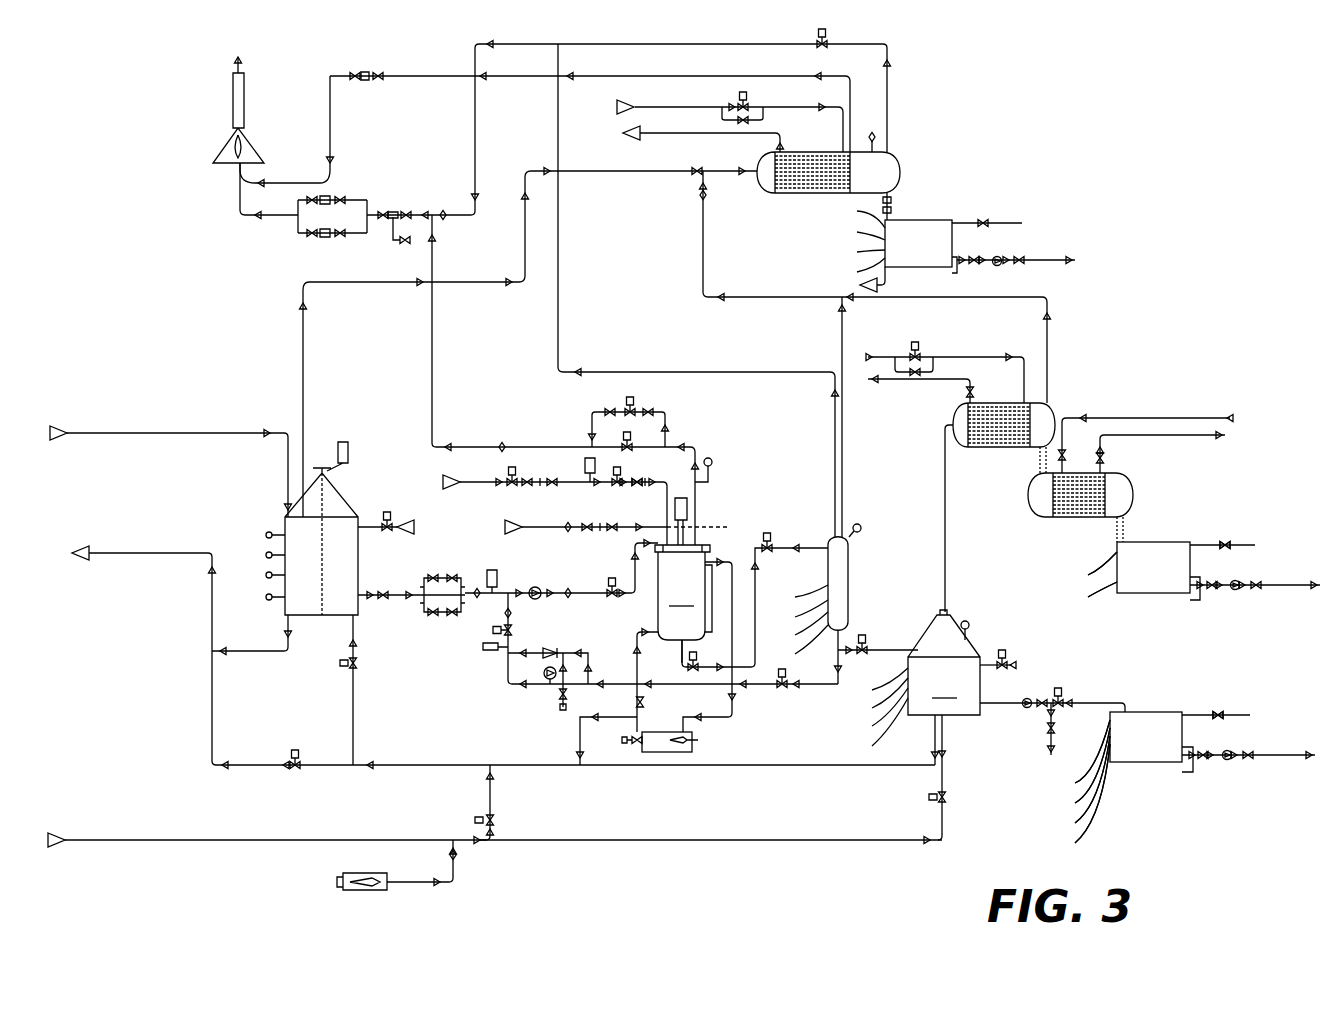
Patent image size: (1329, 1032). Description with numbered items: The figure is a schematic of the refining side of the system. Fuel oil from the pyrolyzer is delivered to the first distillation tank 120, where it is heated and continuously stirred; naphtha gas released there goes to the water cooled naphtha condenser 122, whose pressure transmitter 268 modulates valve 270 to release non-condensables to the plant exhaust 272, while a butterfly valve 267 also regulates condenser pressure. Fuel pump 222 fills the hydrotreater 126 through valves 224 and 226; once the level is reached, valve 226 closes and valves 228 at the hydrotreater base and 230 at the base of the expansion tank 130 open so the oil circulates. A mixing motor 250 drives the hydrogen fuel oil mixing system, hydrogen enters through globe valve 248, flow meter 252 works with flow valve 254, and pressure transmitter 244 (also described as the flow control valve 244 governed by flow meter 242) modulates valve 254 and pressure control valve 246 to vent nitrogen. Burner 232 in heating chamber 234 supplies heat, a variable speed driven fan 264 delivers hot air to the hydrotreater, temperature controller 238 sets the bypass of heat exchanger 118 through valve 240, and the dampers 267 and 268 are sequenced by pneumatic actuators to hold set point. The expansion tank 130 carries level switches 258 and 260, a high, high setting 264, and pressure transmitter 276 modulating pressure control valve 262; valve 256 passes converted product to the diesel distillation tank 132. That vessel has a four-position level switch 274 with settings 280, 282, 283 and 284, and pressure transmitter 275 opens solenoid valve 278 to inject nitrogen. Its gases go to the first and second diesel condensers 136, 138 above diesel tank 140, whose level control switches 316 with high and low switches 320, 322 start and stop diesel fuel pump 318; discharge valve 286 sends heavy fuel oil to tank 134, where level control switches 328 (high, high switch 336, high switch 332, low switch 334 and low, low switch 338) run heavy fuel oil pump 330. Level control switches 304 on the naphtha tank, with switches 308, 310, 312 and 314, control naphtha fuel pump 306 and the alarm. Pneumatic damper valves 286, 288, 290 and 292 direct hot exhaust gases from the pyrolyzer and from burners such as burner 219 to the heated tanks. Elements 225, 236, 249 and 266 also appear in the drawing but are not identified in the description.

The heat exchanger 118 is at (545, 682).
The first distillation vessel 120 is at (358, 560).
The naphtha condenser 122 is at (800, 193).
The hydrogenation reactor 126 is at (683, 592).
The diesel expansion vessel 130 is at (848, 566).
The diesel distillation vessel 132 is at (944, 662).
The heavy fuel oil tank 134 is at (1146, 762).
The first diesel condenser 136 is at (1000, 447).
The second diesel condenser 138 is at (1078, 517).
The diesel tank 140 is at (1150, 593).
The burner 219 is at (367, 891).
The fuel pump 222 is at (529, 589).
The valve 224 is at (611, 578).
The tank ports 225 is at (262, 600).
The valve 226 is at (388, 590).
The valve 228 is at (696, 658).
The valve 230 is at (786, 679).
The burner 232 is at (700, 742).
The heating chamber 234 is at (563, 709).
The valve 236 is at (560, 696).
The temperature controller 238 is at (682, 655).
The valve 240 is at (556, 652).
The flow meter 242 is at (490, 652).
The flow control valve 244 is at (513, 632).
The pressure control valve 246 is at (648, 486).
The globe valve 248 is at (637, 488).
The indicator 249 is at (712, 462).
The mixing motor 250 is at (688, 507).
The flow meter 252 is at (589, 470).
The flow valve 254 is at (615, 486).
The valve 256 is at (863, 635).
The high level switch 258 is at (795, 613).
The low level switch 260 is at (795, 628).
The pressure control valve 262 is at (771, 535).
The variable speed driven fan 264 is at (592, 797).
The column inlet 266 is at (795, 644).
The first damper 267 is at (918, 346).
The second damper 268 is at (874, 132).
The modulating valve 270 is at (828, 34).
The plant exhaust 272 is at (246, 92).
The four-position level switch 274 is at (844, 680).
The pressure transmitter 275 is at (965, 621).
The pressure transmitter 276 is at (860, 524).
The solenoid valve 278 is at (1006, 657).
The high, high level setting 280 is at (875, 684).
The high level setting 282 is at (875, 698).
The low level setting 283 is at (875, 712).
The low, low level setting 284 is at (875, 727).
The discharge valve 286 is at (494, 820).
The pneumatic damper valve 288 is at (947, 797).
The pneumatic damper valve 290 is at (357, 668).
The pneumatic damper valve 292 is at (294, 771).
The level control switches 304 is at (822, 205).
The naphtha fuel pump 306 is at (998, 257).
The high level switch 308 is at (856, 233).
The low level switch 310 is at (856, 252).
The high, high position switch 312 is at (856, 214).
The low, low position switch 314 is at (856, 270).
The level control switches 316 is at (1056, 565).
The diesel fuel pump 318 is at (1236, 582).
The high level switch 320 is at (1088, 568).
The low level switch 322 is at (1088, 594).
The level control switches 328 is at (1042, 770).
The heavy fuel oil fuel pump 330 is at (1231, 750).
The high level switch 332 is at (1078, 771).
The low level switch 334 is at (1078, 785).
The high, high level switch 336 is at (1078, 757).
The low, low level switch 338 is at (1078, 799).